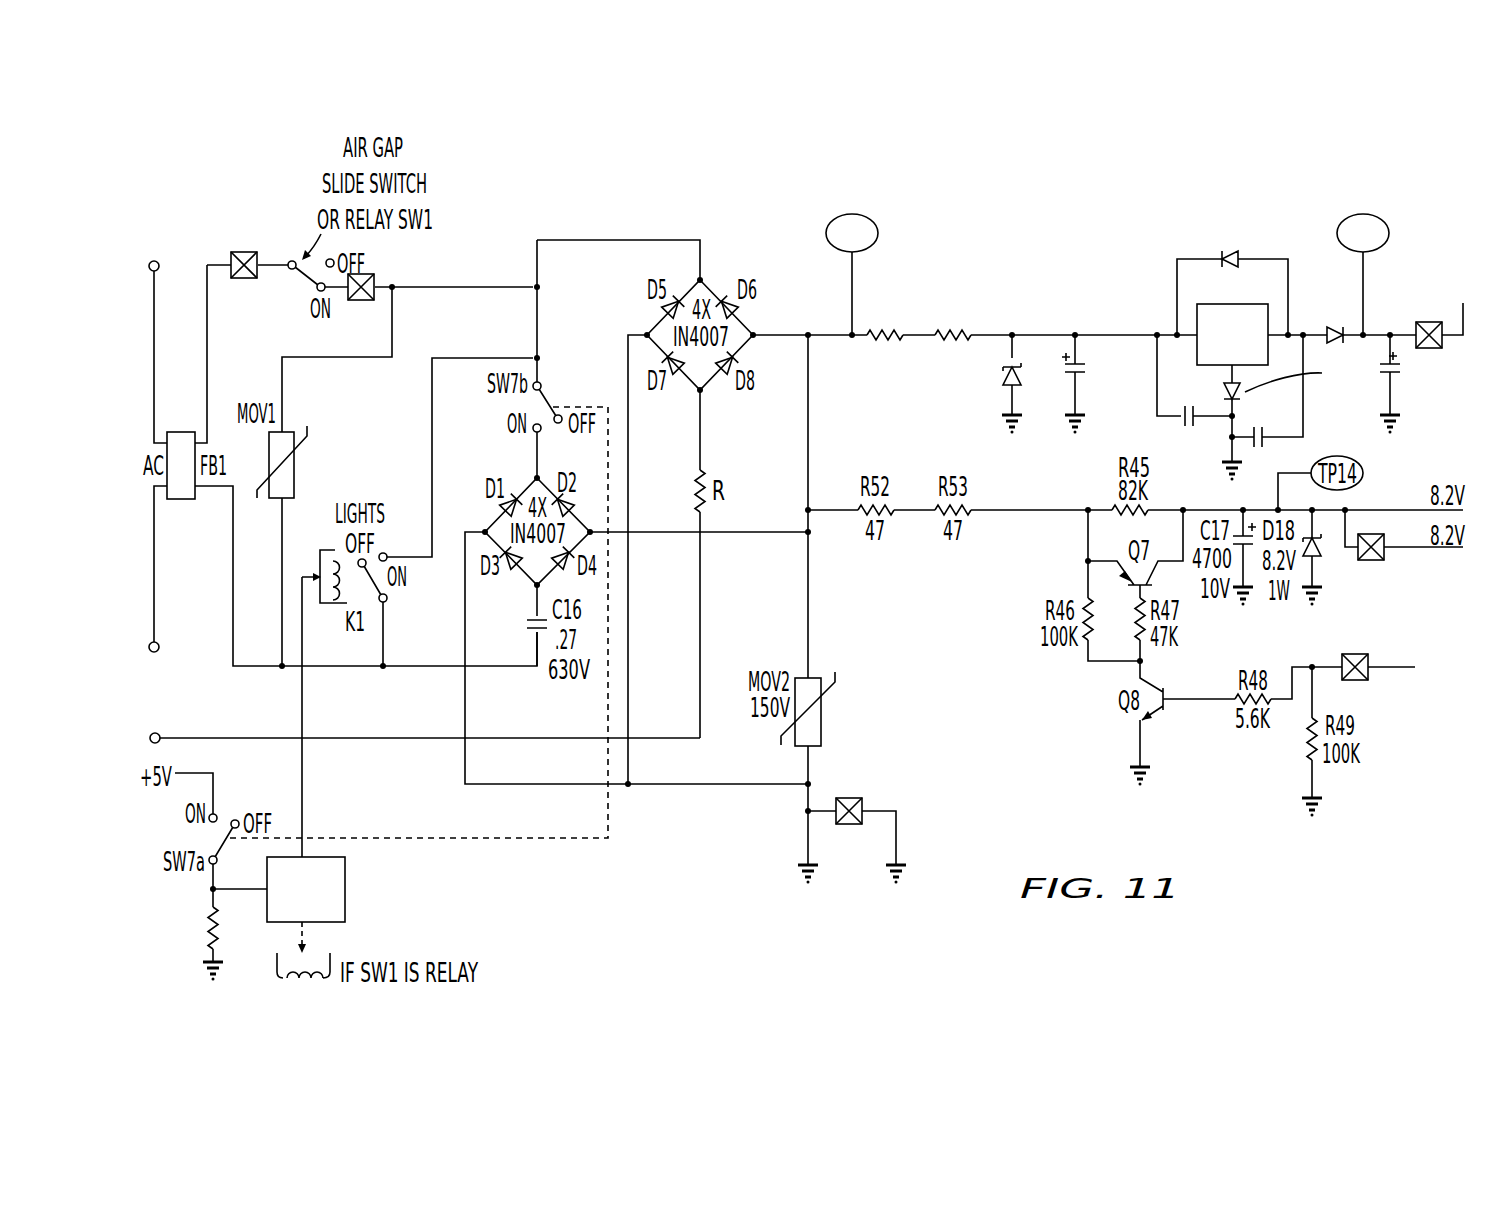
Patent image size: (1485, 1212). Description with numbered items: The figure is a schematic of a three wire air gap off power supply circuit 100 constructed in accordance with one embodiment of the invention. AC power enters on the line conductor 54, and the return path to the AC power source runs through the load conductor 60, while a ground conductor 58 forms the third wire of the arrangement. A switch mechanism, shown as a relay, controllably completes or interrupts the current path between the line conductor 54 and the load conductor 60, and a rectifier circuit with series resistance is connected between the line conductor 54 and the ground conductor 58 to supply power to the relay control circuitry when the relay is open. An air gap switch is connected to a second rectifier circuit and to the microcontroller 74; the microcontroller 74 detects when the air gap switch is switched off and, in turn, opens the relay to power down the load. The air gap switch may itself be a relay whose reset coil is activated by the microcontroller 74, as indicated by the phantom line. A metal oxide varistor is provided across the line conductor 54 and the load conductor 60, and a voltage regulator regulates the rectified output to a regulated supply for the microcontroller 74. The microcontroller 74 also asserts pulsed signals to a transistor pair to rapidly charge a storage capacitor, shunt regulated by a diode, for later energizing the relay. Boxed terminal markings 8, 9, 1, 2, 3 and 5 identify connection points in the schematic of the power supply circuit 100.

The line conductor 54 is at (156, 300).
The load conductor 60 is at (156, 555).
The ground conductor 58 is at (252, 735).
The microcontroller 74 is at (337, 855).
The power supply circuit 100 is at (812, 190).
The connector terminal 8 is at (244, 285).
The connector terminal 9 is at (361, 301).
The connector terminal 1 is at (849, 828).
The connector terminal 2 is at (1371, 565).
The connector terminal 3 is at (1448, 307).
The connector terminal 5 is at (1406, 673).